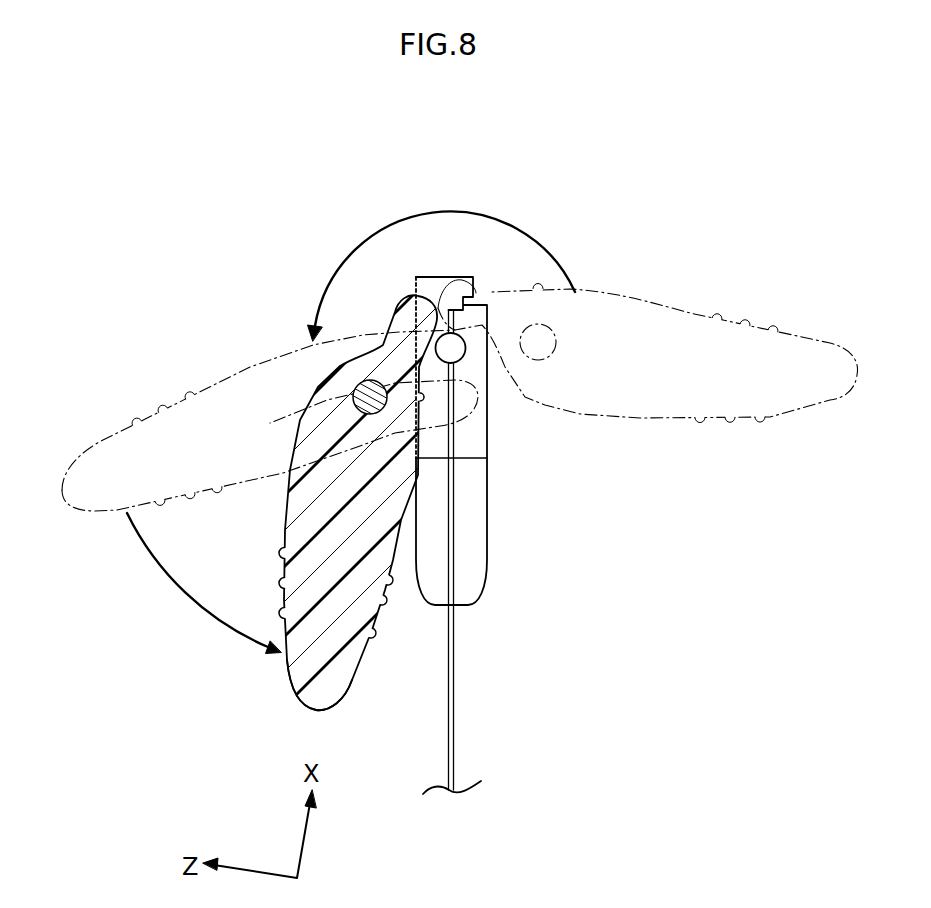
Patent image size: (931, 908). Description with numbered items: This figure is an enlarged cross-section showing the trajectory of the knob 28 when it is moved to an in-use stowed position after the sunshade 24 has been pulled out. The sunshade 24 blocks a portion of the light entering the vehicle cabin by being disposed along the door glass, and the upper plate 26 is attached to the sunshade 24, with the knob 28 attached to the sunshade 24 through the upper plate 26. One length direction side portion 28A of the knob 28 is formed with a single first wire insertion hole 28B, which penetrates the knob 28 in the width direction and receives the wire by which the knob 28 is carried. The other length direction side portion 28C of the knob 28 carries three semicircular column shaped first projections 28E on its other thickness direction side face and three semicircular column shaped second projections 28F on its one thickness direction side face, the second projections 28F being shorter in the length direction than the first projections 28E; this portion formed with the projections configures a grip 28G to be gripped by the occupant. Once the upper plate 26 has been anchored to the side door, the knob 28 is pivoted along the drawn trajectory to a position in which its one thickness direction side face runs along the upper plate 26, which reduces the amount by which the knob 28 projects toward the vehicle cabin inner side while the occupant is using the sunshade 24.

The sunshade 24 is at (455, 678).
The upper plate 26 is at (488, 516).
The knob 28 is at (250, 367).
The one length direction side portion 28A is at (312, 387).
The first wire insertion hole 28B is at (358, 386).
The other length direction side portion 28C is at (282, 628).
The first projections 28E is at (386, 586).
The second projections 28F is at (278, 612).
The grip 28G is at (278, 623).